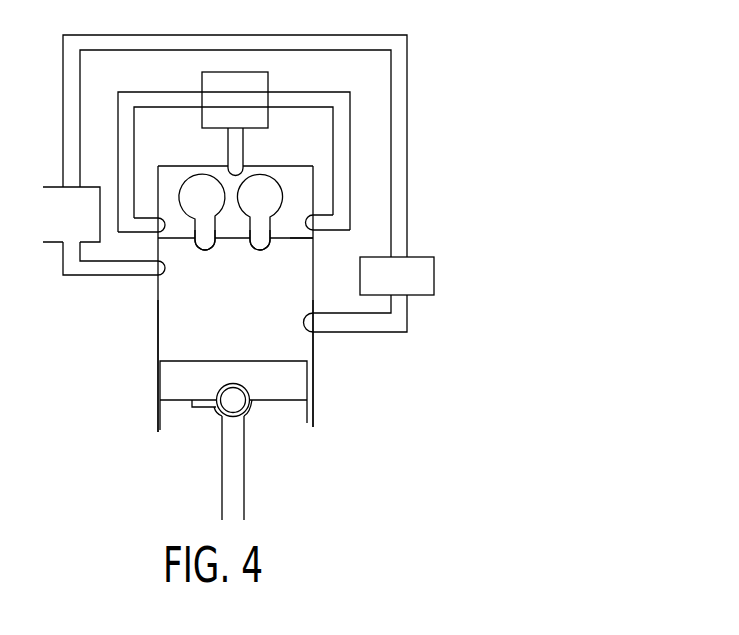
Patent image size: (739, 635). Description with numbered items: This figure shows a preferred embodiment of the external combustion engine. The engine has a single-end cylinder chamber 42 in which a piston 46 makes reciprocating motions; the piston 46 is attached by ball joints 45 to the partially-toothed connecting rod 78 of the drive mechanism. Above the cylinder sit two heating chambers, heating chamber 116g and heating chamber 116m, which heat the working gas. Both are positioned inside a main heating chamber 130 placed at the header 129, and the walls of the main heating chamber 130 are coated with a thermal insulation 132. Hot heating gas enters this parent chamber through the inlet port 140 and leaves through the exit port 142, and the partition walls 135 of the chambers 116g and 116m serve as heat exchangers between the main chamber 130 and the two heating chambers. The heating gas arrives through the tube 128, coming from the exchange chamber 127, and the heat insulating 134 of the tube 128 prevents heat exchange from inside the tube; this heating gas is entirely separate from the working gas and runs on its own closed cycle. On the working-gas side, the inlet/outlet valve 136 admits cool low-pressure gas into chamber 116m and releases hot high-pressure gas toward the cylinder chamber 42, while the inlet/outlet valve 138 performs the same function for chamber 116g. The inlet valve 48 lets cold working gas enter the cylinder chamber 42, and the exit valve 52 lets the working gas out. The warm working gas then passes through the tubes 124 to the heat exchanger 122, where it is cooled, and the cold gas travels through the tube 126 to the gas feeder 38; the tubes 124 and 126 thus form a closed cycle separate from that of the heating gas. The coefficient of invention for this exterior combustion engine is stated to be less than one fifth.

The tube 126 is at (273, 40).
The main heating chamber 130 is at (378, 157).
The heat insulating 134 is at (118, 97).
The tube 128 is at (123, 118).
The exchange chamber 127 is at (222, 98).
The thermal insulation 132 is at (295, 183).
The heating chamber 116g is at (193, 190).
The heating chamber 116m is at (258, 190).
The inlet/outlet valve 138 is at (200, 246).
The inlet/outlet valve 136 is at (263, 246).
The partition walls 135 is at (240, 212).
The heat exchanger 122 is at (55, 232).
The tubes 124 is at (88, 267).
The inlet port 140 is at (179, 229).
The exit port 142 is at (312, 227).
The exit valve 52 is at (157, 273).
The header 129 is at (292, 240).
The gas feeder 38 is at (408, 270).
The inlet valve 48 is at (312, 318).
The cylinder chamber 42 is at (173, 322).
The piston 46 is at (295, 377).
The ball joints 45 is at (235, 405).
The partially-toothed connecting rod 78 is at (235, 475).